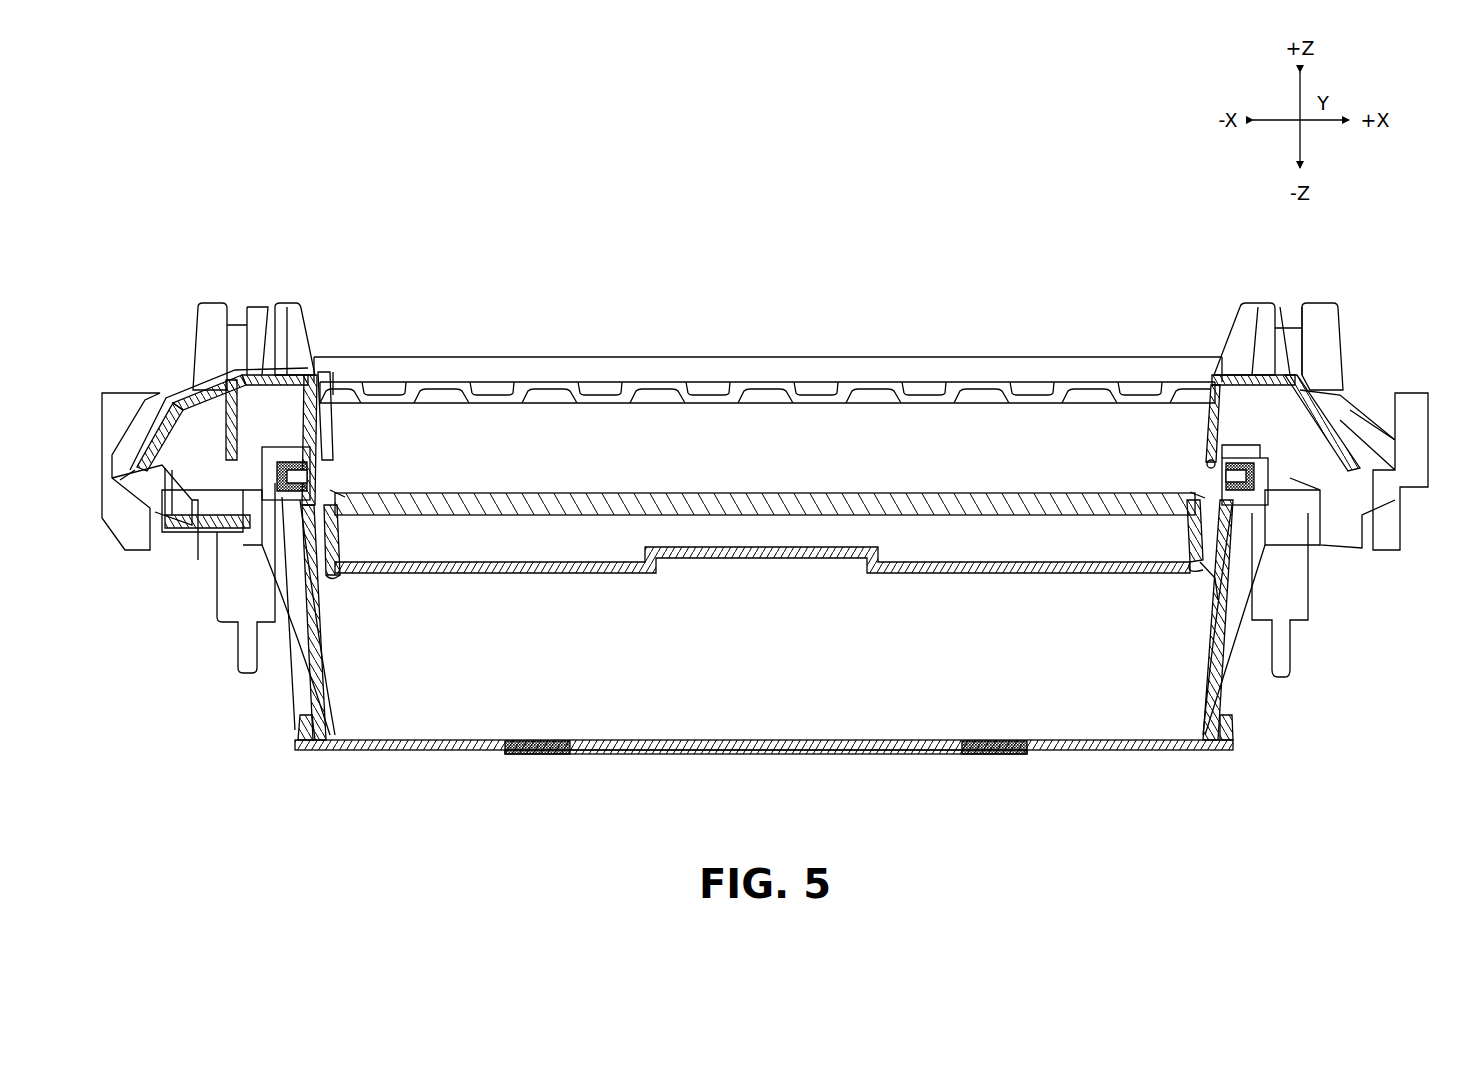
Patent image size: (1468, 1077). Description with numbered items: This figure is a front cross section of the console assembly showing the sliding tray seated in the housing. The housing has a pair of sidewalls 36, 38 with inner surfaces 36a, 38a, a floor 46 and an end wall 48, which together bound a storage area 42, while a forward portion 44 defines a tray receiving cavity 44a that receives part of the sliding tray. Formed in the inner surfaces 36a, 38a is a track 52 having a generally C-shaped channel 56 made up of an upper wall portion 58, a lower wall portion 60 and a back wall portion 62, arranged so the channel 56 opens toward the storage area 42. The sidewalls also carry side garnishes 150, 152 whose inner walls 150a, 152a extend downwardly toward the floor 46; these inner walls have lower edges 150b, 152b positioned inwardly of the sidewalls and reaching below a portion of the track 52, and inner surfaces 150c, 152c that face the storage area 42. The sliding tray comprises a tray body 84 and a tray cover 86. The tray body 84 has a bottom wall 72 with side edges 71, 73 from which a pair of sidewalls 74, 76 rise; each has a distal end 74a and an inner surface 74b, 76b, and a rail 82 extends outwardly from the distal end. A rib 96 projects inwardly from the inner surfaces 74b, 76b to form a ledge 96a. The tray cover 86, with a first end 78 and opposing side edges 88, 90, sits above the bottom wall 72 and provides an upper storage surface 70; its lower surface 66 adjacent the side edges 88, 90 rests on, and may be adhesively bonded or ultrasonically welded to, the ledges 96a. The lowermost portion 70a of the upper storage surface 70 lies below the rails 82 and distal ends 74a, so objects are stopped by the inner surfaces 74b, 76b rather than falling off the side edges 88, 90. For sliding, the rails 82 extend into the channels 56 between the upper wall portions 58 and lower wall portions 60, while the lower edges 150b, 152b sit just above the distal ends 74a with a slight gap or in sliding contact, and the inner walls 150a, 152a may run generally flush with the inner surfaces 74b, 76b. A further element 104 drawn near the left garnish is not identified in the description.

The sidewall 36 is at (322, 678).
The inner surface 36a is at (320, 650).
The sidewall 38 is at (1247, 517).
The inner surface 38a is at (1212, 655).
The storage area 42 is at (823, 669).
The forward portion 44 is at (1058, 362).
The tray receiving cavity 44a is at (1018, 380).
The floor 46 is at (772, 752).
The end wall 48 is at (708, 671).
The track 52 is at (247, 488).
The C-shaped channel 56 is at (295, 503).
The upper wall portion 58 is at (277, 452).
The lower wall portion 60 is at (262, 522).
The back wall portion 62 is at (210, 488).
The lower surface 66 is at (682, 520).
The upper storage surface 70 is at (918, 458).
The lowermost portion 70a is at (835, 493).
The side edge 71 is at (330, 560).
The bottom wall 72 is at (975, 575).
The side edge 73 is at (1195, 578).
The sidewall 74 is at (343, 530).
The distal end 74a is at (330, 468).
The inner surface 74b is at (345, 578).
The sidewall 76 is at (292, 507).
The inner surface 76b is at (1190, 568).
The first end 78 is at (765, 402).
The rail 82 is at (312, 478).
The tray body 84 is at (628, 580).
The tray cover 86 is at (620, 490).
The side edge 88 is at (340, 494).
The side edge 90 is at (1228, 470).
The rib 96 is at (318, 575).
The ledge 96a is at (337, 494).
The guide 104 is at (285, 392).
The side garnish 150 is at (257, 378).
The inner wall 150a is at (290, 373).
The lower edge 150b is at (293, 452).
The inner surface 150c is at (330, 372).
The side garnish 152 is at (1300, 372).
The inner wall 152a is at (1247, 372).
The lower edge 152b is at (1205, 463).
The inner surface 152c is at (1210, 432).